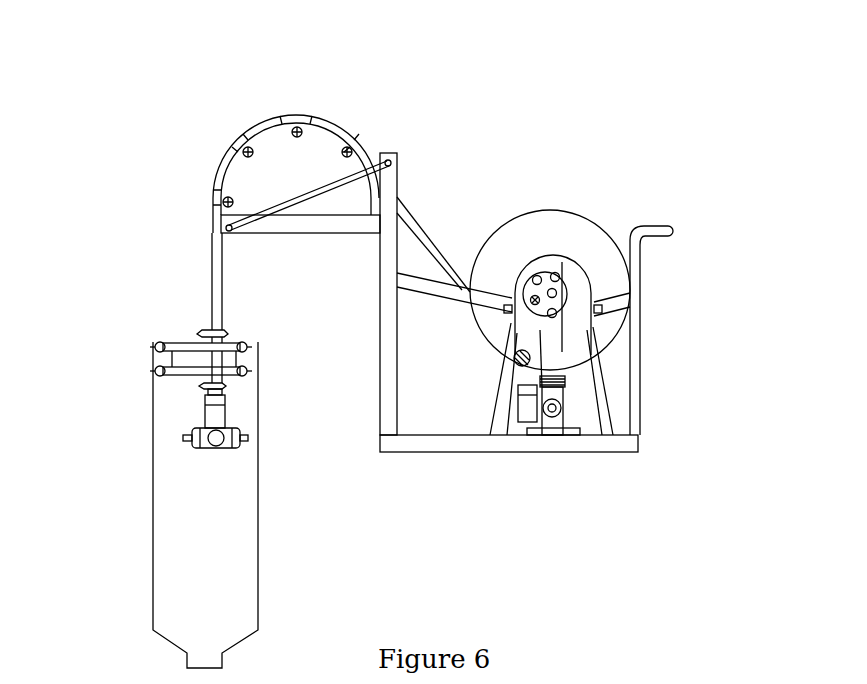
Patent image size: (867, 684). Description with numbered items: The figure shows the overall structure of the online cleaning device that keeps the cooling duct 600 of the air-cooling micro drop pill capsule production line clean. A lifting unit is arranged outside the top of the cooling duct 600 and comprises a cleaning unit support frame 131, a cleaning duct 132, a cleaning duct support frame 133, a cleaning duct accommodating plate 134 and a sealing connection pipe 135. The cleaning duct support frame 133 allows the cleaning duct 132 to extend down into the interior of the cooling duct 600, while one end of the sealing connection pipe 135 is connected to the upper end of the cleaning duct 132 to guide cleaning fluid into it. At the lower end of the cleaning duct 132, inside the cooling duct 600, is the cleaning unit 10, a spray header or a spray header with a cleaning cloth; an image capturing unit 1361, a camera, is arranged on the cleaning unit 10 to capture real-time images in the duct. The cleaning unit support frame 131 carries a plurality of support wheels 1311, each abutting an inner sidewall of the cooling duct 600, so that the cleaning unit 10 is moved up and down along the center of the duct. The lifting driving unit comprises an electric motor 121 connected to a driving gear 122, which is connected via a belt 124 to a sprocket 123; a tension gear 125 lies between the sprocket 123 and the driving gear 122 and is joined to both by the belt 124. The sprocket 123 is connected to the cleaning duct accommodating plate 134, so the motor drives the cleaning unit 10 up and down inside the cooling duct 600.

The cleaning duct support frame 133 is at (302, 160).
The sealing connection pipe 135 is at (426, 232).
The cleaning duct 132 is at (217, 278).
The support wheels 1311 is at (153, 340).
The cleaning unit support frame 131 is at (242, 370).
The cooling duct 600 is at (152, 450).
The cleaning unit 10 is at (237, 433).
The image capturing unit 1361 is at (220, 445).
The cleaning duct accommodating plate 134 is at (548, 238).
The sprocket 123 is at (530, 258).
The belt 124 is at (533, 342).
The tension gear 125 is at (567, 383).
The electric motor 121 is at (535, 437).
The driving gear 122 is at (568, 437).